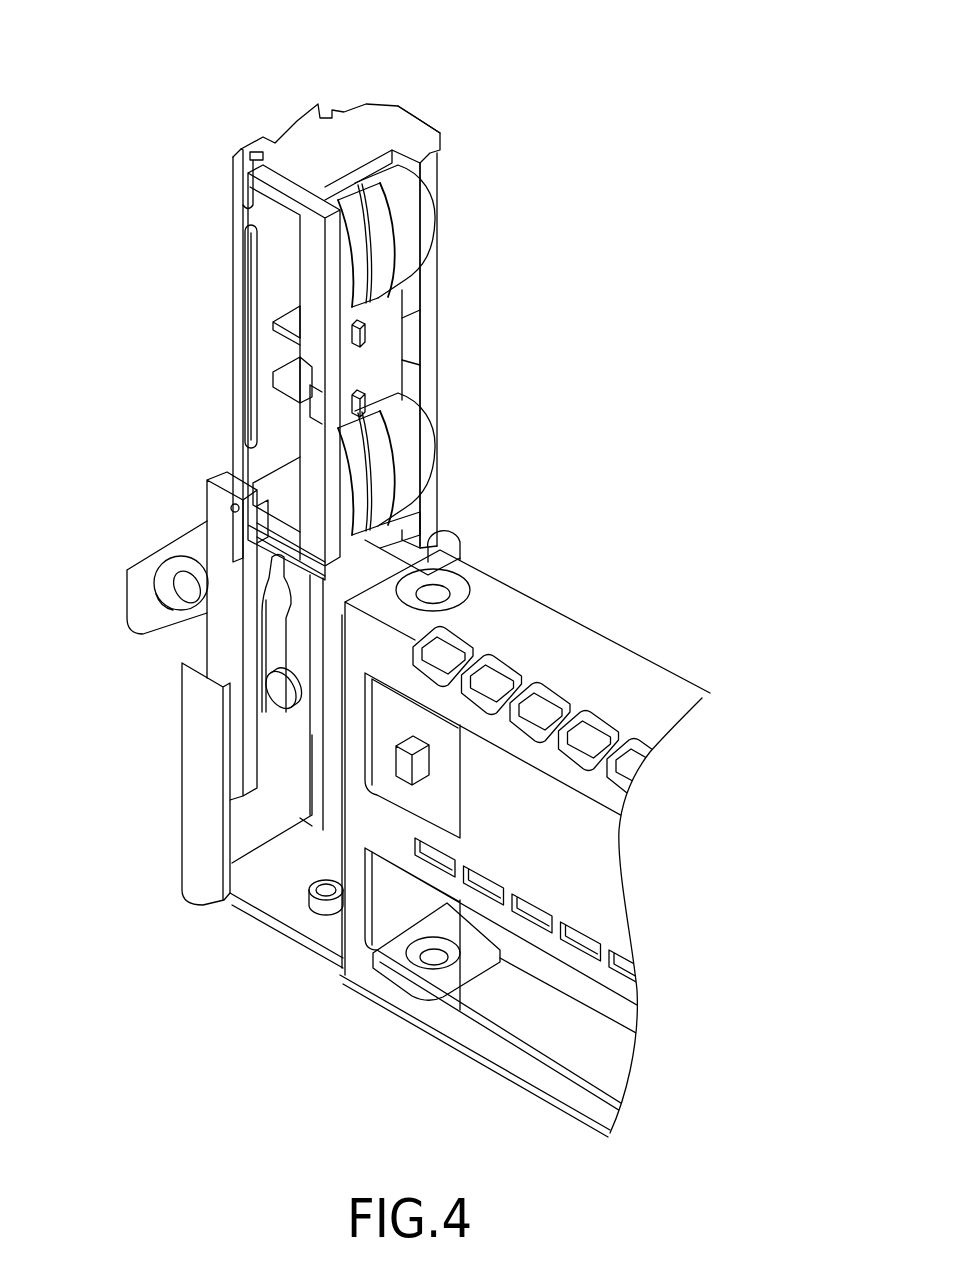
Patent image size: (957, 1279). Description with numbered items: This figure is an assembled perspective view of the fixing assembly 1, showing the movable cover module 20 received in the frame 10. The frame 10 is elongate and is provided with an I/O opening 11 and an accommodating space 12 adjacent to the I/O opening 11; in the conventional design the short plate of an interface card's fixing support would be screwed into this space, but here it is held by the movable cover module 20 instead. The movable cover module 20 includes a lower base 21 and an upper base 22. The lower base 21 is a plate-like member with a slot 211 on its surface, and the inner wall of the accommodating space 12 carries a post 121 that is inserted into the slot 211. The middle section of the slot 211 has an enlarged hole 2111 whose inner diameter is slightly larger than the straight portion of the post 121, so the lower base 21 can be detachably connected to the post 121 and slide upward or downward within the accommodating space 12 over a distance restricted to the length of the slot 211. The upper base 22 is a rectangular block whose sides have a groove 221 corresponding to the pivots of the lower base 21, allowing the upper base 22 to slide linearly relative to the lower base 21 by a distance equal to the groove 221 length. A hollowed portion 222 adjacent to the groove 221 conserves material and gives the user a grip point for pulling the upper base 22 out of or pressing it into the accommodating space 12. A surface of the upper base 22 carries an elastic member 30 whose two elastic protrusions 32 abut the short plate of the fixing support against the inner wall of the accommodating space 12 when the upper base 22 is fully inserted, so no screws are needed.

The fixing assembly 1 is at (413, 33).
The frame 10 is at (602, 626).
The I/O opening 11 is at (508, 1008).
The accommodating space 12 is at (266, 894).
The post 121 is at (287, 698).
The movable cover module 20 is at (192, 268).
The lower base 21 is at (217, 545).
The slot 211 is at (273, 650).
The enlarged hole 2111 is at (262, 606).
The upper base 22 is at (305, 152).
The groove 221 is at (253, 415).
The hollowed portion 222 is at (290, 268).
The elastic member 30 is at (388, 375).
The elastic protrusion 32 is at (417, 233).